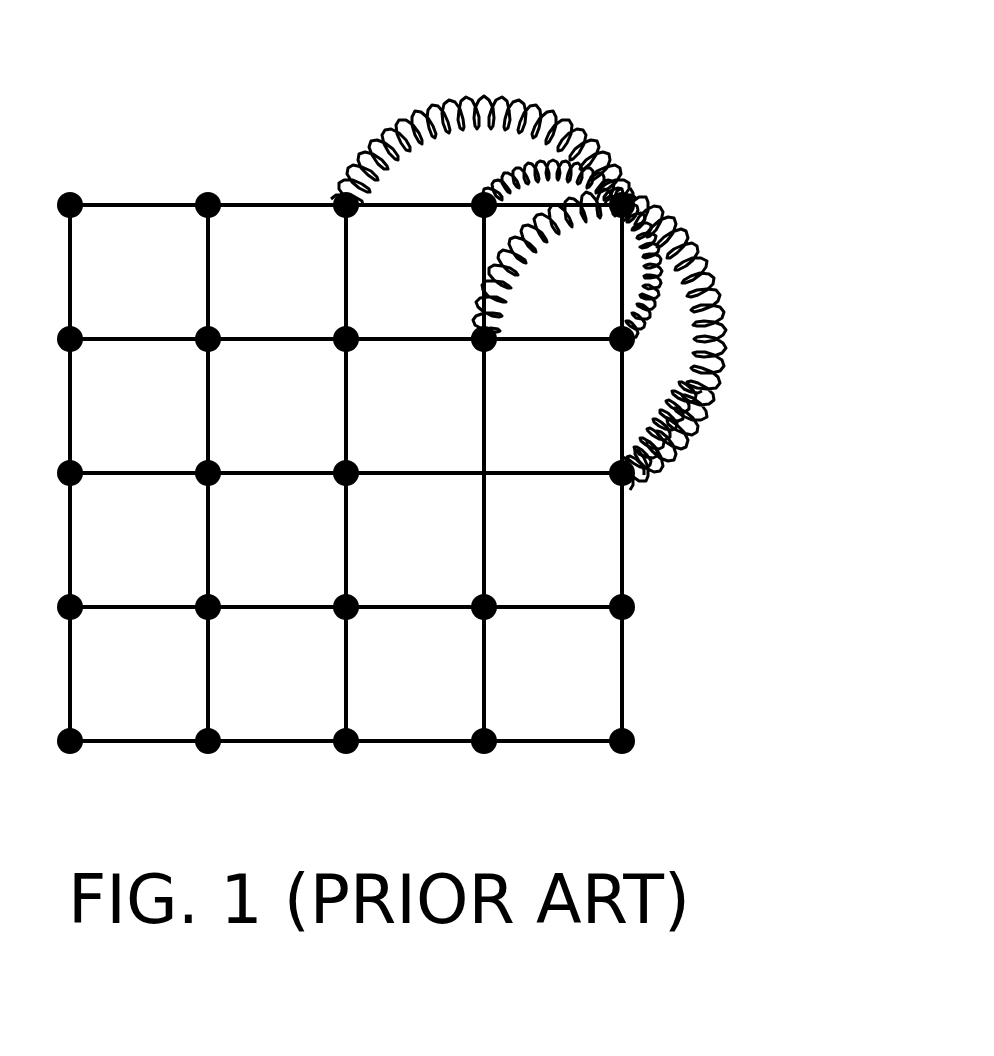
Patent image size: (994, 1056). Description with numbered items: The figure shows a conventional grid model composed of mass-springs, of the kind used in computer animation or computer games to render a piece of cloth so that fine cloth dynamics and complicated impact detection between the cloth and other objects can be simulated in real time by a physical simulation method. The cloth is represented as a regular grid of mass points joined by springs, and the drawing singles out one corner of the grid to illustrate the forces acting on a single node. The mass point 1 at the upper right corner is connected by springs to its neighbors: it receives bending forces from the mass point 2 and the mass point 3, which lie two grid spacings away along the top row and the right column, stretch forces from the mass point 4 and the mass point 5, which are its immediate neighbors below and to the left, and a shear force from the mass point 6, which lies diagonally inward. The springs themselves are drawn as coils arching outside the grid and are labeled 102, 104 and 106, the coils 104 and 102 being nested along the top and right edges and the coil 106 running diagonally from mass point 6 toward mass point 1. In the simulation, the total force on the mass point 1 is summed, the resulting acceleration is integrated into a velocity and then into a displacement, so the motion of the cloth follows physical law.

The mass point 1 is at (630, 198).
The mass point 2 is at (481, 202).
The mass point 3 is at (697, 423).
The mass point 4 is at (632, 480).
The mass point 5 is at (343, 202).
The mass point 6 is at (488, 345).
The spring 102 is at (548, 172).
The spring 104 is at (523, 112).
The spring 106 is at (553, 237).